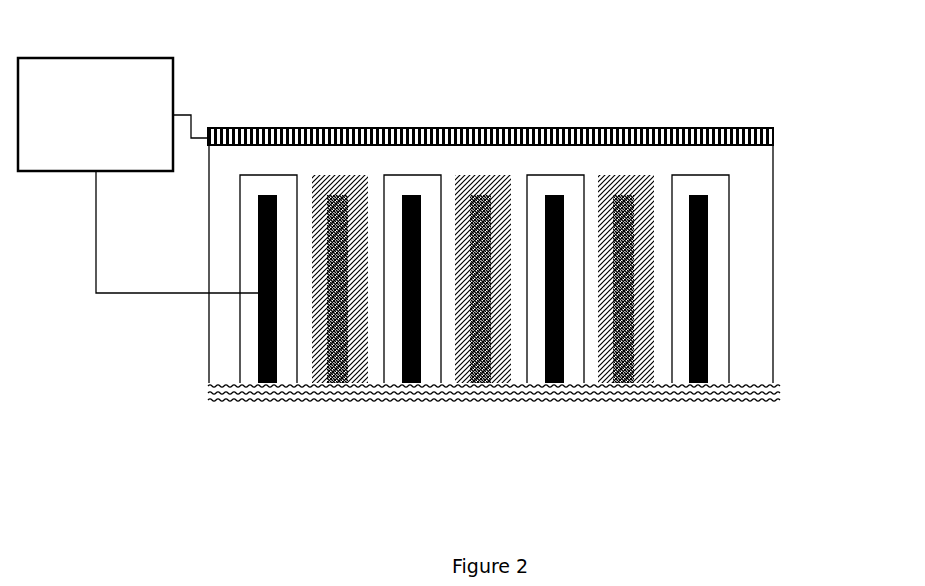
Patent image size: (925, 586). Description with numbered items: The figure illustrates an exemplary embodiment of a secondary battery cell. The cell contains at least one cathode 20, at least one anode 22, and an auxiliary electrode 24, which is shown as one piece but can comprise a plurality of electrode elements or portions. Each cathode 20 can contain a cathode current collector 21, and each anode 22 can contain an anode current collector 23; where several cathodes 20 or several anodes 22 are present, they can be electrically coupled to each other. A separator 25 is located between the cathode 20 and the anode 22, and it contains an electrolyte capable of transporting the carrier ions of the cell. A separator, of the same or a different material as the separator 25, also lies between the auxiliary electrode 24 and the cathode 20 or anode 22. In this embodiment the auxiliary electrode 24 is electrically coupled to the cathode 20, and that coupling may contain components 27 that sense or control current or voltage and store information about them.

The cathode 20 is at (255, 188).
The cathode current collector 21 is at (255, 305).
The anode 22 is at (643, 333).
The anode current collector 23 is at (620, 387).
The auxiliary electrode 24 is at (720, 128).
The separator 25 is at (752, 222).
The components 27 is at (153, 89).